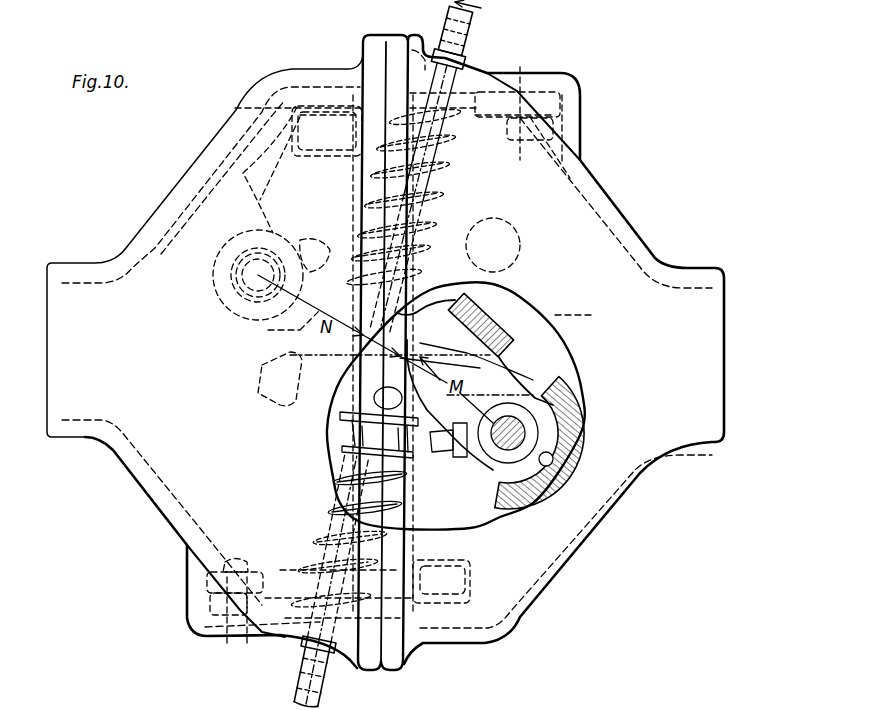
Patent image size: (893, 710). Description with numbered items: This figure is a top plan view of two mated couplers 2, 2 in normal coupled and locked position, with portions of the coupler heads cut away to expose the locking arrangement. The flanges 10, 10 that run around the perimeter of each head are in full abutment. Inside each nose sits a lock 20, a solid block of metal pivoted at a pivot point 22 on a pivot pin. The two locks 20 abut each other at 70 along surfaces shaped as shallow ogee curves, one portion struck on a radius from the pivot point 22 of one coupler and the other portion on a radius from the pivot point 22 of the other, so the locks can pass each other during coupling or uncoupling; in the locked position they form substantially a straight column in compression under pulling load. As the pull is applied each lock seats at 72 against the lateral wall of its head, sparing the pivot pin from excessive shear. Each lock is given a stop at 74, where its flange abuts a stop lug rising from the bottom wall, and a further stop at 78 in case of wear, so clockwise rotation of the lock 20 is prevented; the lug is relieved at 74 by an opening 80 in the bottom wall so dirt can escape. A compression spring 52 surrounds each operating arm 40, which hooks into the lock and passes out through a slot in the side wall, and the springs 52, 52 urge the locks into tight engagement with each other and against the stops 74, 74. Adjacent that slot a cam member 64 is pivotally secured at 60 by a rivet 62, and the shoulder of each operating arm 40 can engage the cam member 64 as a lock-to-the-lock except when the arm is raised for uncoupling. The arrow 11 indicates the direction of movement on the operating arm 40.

The coupler 2 is at (160, 207).
The flange 10 is at (399, 48).
The direction of actuation 11 is at (481, 12).
The lock 20 is at (490, 380).
The pivot point 22 is at (512, 431).
The operating arm 40 is at (467, 38).
The compression spring 52 is at (441, 173).
The pivotal securing point 60 is at (522, 90).
The rivet 62 is at (588, 155).
The cam member 64 is at (300, 95).
The abutment of the locks 70 is at (492, 302).
The lock seat 72 is at (567, 457).
The stop 74 is at (457, 458).
The further stop 78 is at (510, 322).
The opening 80 is at (437, 452).